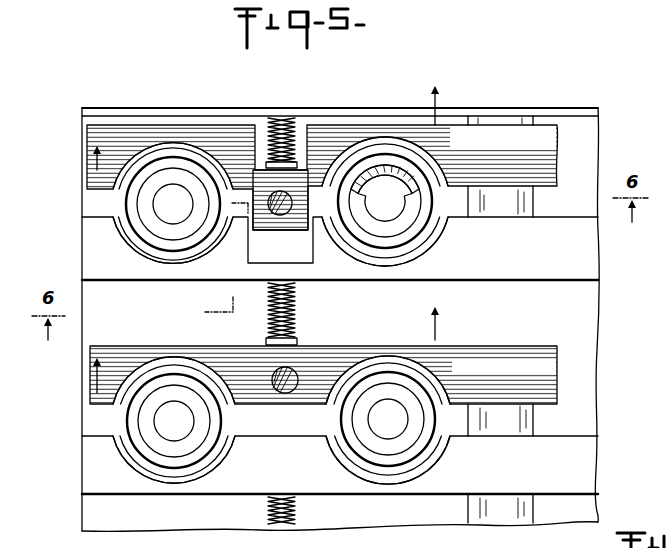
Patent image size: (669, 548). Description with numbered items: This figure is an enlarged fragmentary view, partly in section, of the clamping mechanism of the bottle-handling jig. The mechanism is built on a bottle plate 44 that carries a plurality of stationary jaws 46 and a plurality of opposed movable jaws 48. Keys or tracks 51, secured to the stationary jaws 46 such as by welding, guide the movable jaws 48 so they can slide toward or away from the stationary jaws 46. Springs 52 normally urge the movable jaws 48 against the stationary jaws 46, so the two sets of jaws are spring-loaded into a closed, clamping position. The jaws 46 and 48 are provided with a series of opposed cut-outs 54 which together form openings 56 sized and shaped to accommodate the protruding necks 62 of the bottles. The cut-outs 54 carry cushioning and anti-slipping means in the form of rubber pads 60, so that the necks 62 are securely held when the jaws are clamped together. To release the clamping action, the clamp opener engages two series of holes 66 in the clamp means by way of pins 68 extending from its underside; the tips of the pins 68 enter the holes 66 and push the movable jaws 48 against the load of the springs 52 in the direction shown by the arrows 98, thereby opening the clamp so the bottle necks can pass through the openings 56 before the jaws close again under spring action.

The bottle plate 44 is at (81, 485).
The stationary jaws 46 is at (97, 265).
The movable jaws 48 is at (93, 179).
The keys or tracks 51 is at (520, 205).
The springs 52 is at (290, 118).
The cut-outs 54 is at (133, 172).
The openings 56 is at (125, 228).
The rubber pads 60 is at (163, 143).
The protruding necks 62 is at (178, 175).
The holes 66 is at (287, 198).
The pins 68 is at (282, 208).
The arrows 98 is at (87, 157).